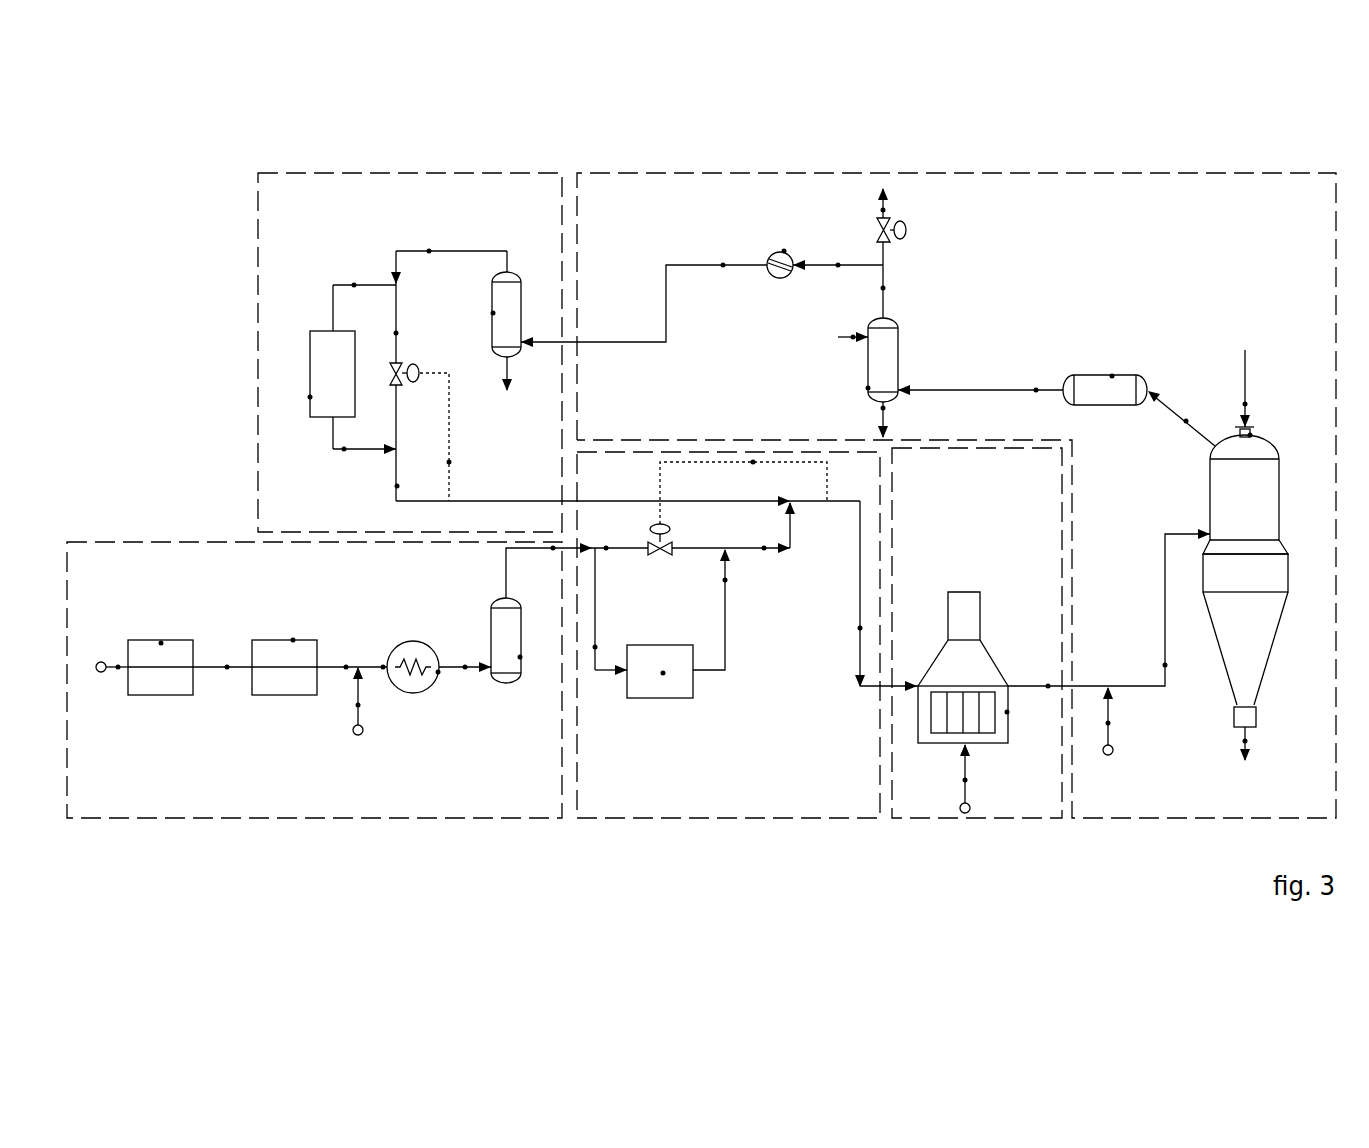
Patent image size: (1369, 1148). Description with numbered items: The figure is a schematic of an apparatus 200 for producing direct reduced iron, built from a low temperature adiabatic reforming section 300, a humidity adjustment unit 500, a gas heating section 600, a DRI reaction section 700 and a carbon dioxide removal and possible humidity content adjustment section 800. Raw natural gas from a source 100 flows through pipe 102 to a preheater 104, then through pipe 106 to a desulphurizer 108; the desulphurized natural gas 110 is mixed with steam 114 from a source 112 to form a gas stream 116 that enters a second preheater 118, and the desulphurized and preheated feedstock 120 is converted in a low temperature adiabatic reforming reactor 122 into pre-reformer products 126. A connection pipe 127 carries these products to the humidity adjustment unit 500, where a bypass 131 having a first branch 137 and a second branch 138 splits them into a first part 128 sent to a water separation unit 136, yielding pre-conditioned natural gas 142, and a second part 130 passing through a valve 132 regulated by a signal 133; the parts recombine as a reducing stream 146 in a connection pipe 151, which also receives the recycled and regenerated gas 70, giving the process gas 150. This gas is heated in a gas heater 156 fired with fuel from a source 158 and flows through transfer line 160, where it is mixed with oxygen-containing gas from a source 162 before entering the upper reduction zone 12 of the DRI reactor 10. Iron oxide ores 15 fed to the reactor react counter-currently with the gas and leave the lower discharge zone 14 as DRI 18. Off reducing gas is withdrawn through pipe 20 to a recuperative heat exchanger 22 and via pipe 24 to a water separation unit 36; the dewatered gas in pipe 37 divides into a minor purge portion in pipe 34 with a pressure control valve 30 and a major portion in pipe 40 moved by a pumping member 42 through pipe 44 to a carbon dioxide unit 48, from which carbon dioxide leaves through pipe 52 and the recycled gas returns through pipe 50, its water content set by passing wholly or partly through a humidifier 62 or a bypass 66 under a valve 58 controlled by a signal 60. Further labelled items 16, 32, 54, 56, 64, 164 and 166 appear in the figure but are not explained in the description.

The apparatus 200 is at (199, 166).
The carbon dioxide removal and possible humidity content adjustment section 800 is at (308, 208).
The low temperature adiabatic reforming section 300 is at (152, 797).
The humidity adjustment unit 500 is at (632, 797).
The gas heating section 600 is at (942, 797).
The DRI reaction section 700 is at (1320, 797).
The direct reduced iron reactor 10 is at (1269, 570).
The upper reduction zone 12 is at (1260, 508).
The lower discharge zone 14 is at (1260, 633).
The iron oxide ores 15 is at (1243, 404).
The inlet nozzle 16 is at (1252, 435).
The DRI 18 is at (1243, 741).
The pipe 20 is at (1185, 423).
The recuperative heat exchanger 22 is at (1112, 374).
The pipe 24 is at (1036, 388).
The pressure control valve 30 is at (901, 221).
The separator vessel 32 is at (853, 339).
The pipe 34 is at (882, 211).
The water separation unit 36 is at (866, 388).
The pipe 37 is at (883, 288).
The pipe 40 is at (838, 263).
The pumping member 42 is at (784, 250).
The pipe 44 is at (723, 263).
The carbon dioxide unit 48 is at (491, 313).
The pipe 50 is at (429, 249).
The pipe 52 is at (510, 388).
The separator bottoms outlet 54 is at (885, 409).
The branch line 56 is at (354, 283).
The valve 58 is at (413, 364).
The signal 60 is at (449, 460).
The humidifier 62 is at (308, 397).
The return line 64 is at (342, 450).
The bypass 66 is at (396, 331).
The recycled and regenerated gas 70 is at (395, 486).
The source 100 is at (100, 682).
The pipe 102 is at (118, 665).
The preheater 104 is at (161, 641).
The pipe 106 is at (227, 669).
The desulphurizer 108 is at (293, 638).
The desulphurized natural gas 110 is at (346, 665).
The source 112 is at (356, 749).
The steam 114 is at (360, 705).
The gas stream 116 is at (383, 665).
The second preheater 118 is at (438, 673).
The desulphurized and preheated feedstock 120 is at (465, 665).
The low temperature adiabatic reforming reactor 122 is at (520, 658).
The pre-reformer products 126 is at (553, 549).
The connection pipe 127 is at (570, 534).
The first part 128 is at (597, 645).
The second part 130 is at (606, 550).
The bypass 131 is at (612, 522).
The valve 132 is at (660, 552).
The signal 133 is at (753, 464).
The water separation unit 136 is at (663, 675).
The first branch 137 is at (589, 666).
The second branch 138 is at (640, 536).
The treated/pre-conditioned natural gas 142 is at (725, 582).
The reducing stream 146 is at (763, 547).
The reducing stream 150 is at (858, 628).
The connection pipe 151 is at (850, 538).
The gas heater 156 is at (1009, 712).
The source 158 is at (967, 780).
The transfer line 160 is at (1048, 684).
The source 162 is at (1110, 766).
The quench line 164 is at (1110, 723).
The reactor inlet line 166 is at (1165, 663).